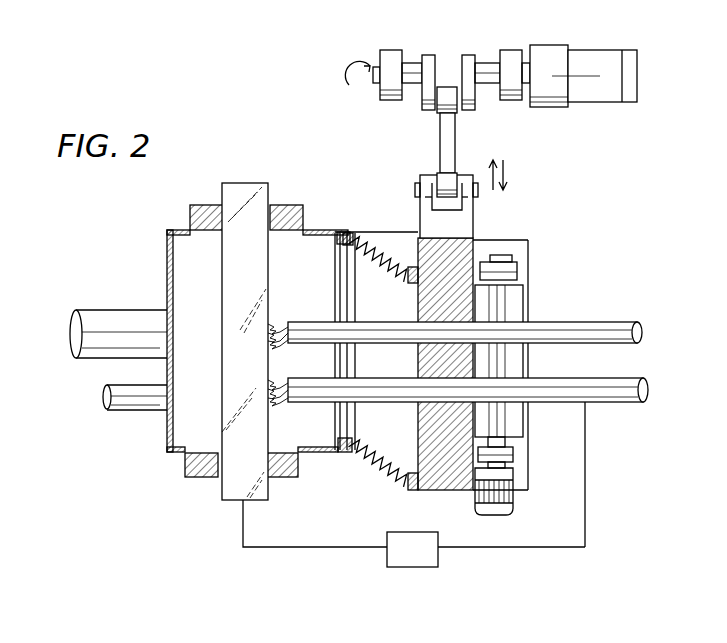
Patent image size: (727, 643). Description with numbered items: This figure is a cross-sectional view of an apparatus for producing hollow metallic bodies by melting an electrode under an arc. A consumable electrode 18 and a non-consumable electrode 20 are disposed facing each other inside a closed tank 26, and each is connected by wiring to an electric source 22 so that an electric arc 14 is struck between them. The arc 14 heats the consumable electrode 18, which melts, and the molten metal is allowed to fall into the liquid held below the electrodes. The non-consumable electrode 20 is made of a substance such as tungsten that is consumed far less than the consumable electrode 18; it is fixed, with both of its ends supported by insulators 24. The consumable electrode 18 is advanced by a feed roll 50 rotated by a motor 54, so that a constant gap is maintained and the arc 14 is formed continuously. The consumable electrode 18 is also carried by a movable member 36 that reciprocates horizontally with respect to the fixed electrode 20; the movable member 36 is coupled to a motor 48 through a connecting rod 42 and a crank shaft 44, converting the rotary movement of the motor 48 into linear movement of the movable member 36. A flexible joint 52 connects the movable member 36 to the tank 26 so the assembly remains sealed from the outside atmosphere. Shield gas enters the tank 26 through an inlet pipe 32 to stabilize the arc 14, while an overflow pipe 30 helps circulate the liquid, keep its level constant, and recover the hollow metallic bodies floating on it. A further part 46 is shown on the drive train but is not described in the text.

The electric arc 14 is at (278, 327).
The consumable electrode 18 is at (597, 330).
The non-consumable electrode 20 is at (252, 186).
The electric source 22 is at (420, 558).
The insulators 24 is at (198, 478).
The closed tank 26 is at (167, 255).
The overflow pipe 30 is at (125, 320).
The inlet pipe 32 is at (143, 402).
The movable member 36 is at (468, 252).
The connecting rod 42 is at (455, 137).
The crank shaft 44 is at (463, 52).
The coupling disc 46 is at (512, 58).
The motor 48 is at (585, 60).
The feed roll 50 is at (510, 297).
The flexible joint 52 is at (362, 238).
The motor 54 is at (513, 493).